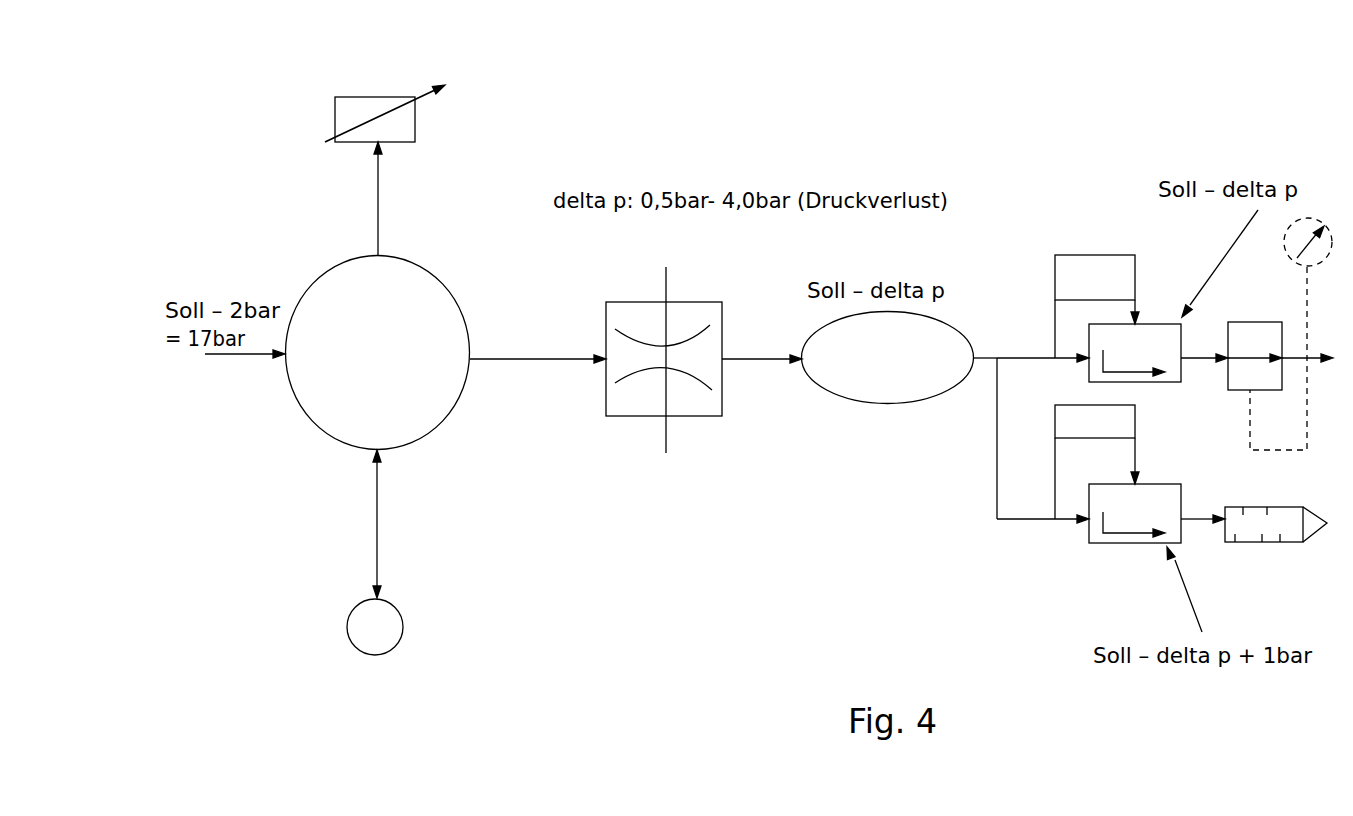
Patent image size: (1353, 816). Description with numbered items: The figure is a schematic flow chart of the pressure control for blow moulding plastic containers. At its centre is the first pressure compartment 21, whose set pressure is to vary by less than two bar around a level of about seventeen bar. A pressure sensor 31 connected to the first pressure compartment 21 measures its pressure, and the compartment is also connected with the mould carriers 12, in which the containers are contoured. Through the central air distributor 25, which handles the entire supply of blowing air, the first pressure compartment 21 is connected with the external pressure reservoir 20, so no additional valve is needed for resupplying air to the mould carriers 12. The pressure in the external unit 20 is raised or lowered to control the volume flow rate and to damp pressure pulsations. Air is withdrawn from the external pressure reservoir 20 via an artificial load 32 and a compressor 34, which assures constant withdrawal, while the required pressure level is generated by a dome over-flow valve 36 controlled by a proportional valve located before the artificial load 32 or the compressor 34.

The mould carriers 12 is at (393, 630).
The external pressure reservoir 20 is at (910, 403).
The first pressure compartment 21 is at (440, 402).
The central air distributor 25 is at (698, 416).
The pressure sensor 31 is at (415, 119).
The artificial load 32 is at (1252, 333).
The compressor 34 is at (1272, 542).
The dome over-flow valve 36 is at (1135, 267).